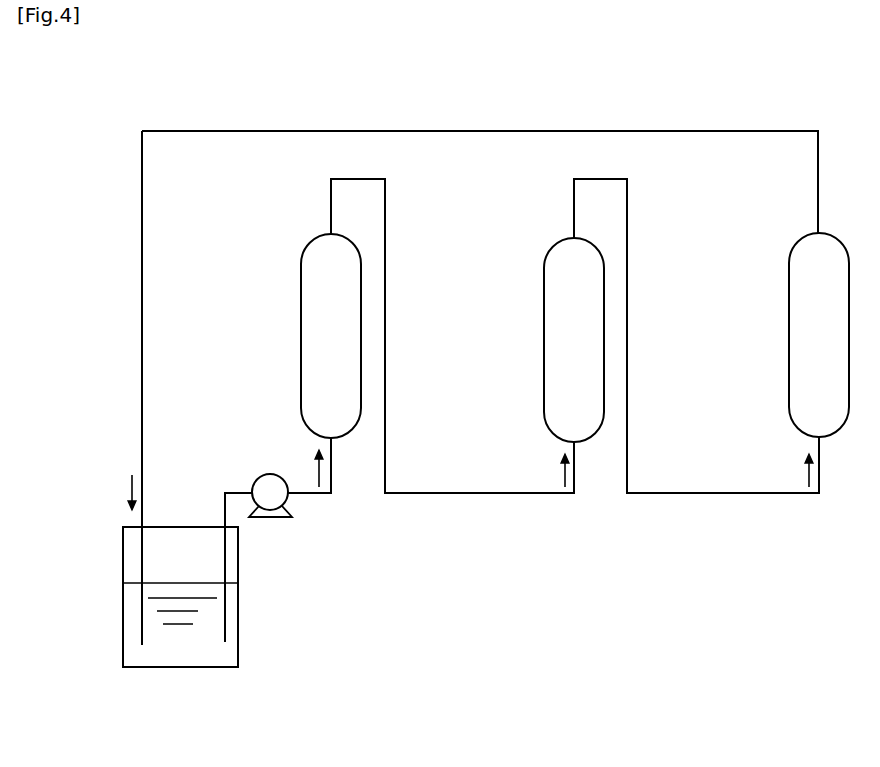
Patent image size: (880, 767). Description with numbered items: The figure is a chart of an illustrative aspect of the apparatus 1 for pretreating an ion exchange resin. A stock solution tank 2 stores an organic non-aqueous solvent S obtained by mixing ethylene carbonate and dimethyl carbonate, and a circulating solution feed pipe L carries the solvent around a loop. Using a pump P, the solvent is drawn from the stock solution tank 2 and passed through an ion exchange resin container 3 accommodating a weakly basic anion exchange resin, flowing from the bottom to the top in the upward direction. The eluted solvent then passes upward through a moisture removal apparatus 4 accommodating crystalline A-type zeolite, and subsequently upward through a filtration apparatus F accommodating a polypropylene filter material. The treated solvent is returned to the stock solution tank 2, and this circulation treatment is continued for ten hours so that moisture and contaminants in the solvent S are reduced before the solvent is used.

The apparatus for pretreating an ion exchange resin 1 is at (826, 112).
The stock solution tank 2 is at (123, 610).
The ion exchange resin container 3 is at (331, 336).
The moisture removal apparatus 4 is at (574, 340).
The filtration apparatus F is at (819, 335).
The pump P is at (262, 478).
The non-aqueous solvent S is at (185, 655).
The circulating solution feed pipe L is at (473, 373).